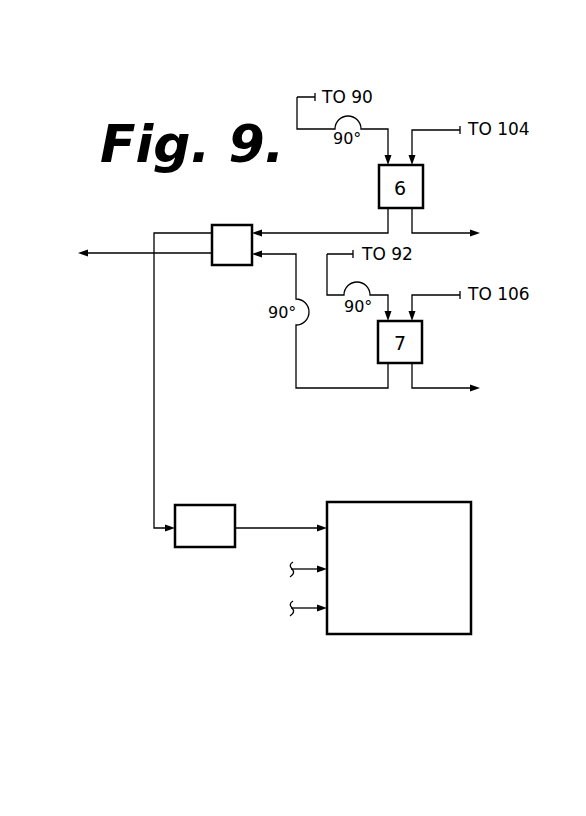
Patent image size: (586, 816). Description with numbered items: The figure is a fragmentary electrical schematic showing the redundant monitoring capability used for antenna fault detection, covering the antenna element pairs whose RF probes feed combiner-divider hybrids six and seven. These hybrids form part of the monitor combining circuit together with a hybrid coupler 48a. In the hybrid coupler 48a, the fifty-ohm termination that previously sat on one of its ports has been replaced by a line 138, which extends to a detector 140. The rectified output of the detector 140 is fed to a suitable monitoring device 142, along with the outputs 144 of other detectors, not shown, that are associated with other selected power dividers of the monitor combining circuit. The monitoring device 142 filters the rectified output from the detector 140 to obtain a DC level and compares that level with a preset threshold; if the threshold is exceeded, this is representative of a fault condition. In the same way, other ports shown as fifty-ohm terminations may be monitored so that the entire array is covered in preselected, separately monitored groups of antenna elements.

The hybrid coupler 48a is at (253, 216).
The line 138 is at (154, 368).
The detector 140 is at (235, 505).
The monitoring device 142 is at (472, 502).
The outputs of detectors 144 is at (306, 606).